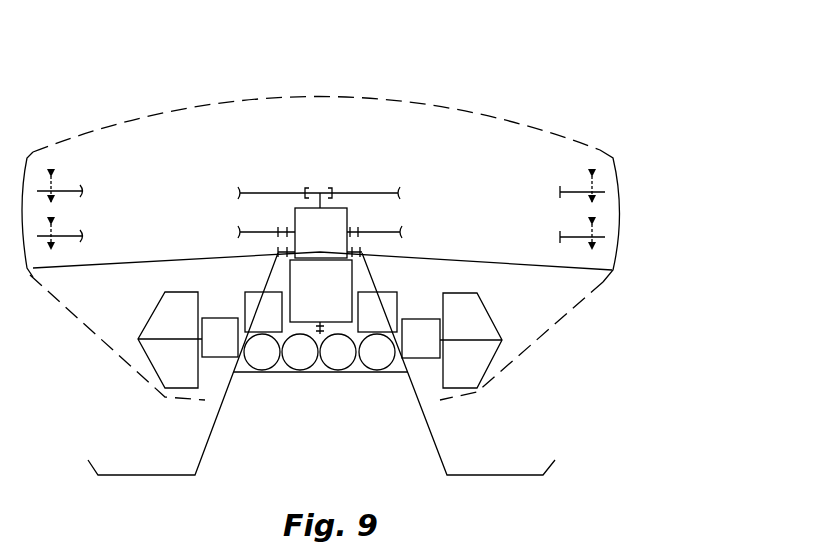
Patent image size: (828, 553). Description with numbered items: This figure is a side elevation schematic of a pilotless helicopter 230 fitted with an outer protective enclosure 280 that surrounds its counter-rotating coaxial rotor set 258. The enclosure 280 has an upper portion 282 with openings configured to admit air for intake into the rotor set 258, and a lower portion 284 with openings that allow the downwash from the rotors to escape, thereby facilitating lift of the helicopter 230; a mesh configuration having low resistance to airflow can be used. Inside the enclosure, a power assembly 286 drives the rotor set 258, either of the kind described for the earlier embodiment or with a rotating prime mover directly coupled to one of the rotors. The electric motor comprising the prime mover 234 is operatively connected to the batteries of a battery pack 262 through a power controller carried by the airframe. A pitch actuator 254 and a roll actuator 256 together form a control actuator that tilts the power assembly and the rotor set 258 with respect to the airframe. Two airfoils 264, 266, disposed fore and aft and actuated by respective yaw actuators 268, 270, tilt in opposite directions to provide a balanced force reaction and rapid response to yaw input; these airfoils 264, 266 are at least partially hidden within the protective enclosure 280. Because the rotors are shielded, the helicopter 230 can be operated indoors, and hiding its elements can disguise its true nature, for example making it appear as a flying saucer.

The pilotless helicopter 230 is at (472, 218).
The prime mover 234 is at (338, 305).
The pitch actuator 254 is at (378, 317).
The roll actuator 256 is at (270, 310).
The counter-rotating coaxial rotor set 258 is at (238, 195).
The battery pack 262 is at (308, 373).
The airfoil 264 is at (490, 310).
The airfoil 266 is at (203, 302).
The yaw actuator 268 is at (420, 338).
The yaw actuator 270 is at (220, 342).
The outer protective enclosure 280 is at (623, 210).
The upper portion 282 is at (355, 95).
The lower portion 284 is at (537, 343).
The power assembly 286 is at (353, 268).